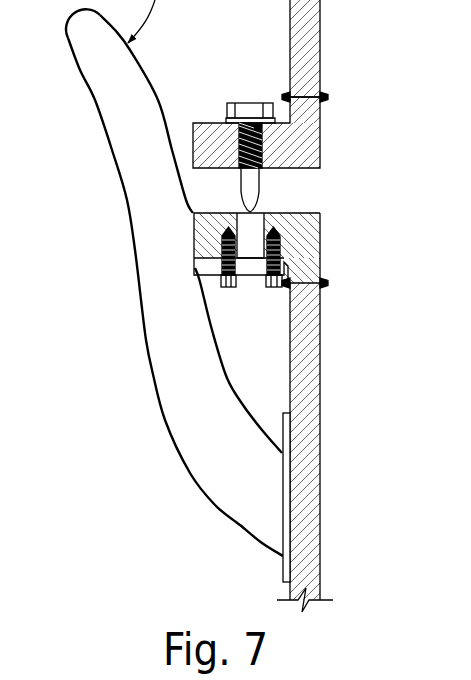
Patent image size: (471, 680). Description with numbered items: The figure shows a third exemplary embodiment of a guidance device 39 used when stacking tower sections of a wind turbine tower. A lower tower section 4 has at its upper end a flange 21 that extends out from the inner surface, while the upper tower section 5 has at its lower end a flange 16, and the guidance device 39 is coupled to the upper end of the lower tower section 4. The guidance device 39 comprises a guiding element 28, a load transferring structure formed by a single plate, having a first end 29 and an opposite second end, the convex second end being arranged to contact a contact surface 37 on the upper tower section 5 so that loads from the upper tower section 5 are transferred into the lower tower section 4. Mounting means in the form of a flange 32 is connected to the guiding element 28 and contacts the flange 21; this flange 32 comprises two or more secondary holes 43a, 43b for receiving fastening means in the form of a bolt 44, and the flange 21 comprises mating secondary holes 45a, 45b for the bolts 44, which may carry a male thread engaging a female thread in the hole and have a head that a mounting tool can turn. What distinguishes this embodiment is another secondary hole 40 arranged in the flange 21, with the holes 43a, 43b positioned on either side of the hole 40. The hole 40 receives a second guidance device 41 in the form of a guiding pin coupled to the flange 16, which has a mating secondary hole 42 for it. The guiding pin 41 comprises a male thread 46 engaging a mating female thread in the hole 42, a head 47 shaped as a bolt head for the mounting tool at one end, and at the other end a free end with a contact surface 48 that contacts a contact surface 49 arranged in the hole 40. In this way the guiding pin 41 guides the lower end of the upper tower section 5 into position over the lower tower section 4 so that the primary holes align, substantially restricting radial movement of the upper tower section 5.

The tower section 4 is at (307, 462).
The tower section 5 is at (305, 41).
The flange 16 is at (203, 142).
The flange 21 is at (202, 227).
The guiding element 28 is at (179, 268).
The first end 29 is at (187, 475).
The flange 32 is at (200, 268).
The contact surface 37 is at (193, 163).
The guidance device 39 is at (118, 312).
The secondary hole 40 is at (269, 212).
The second guidance device 41 is at (262, 113).
The mating secondary hole 42 is at (265, 137).
The secondary hole 43a is at (218, 268).
The secondary hole 43b is at (243, 277).
The bolt 44 is at (275, 287).
The mating secondary hole 45a is at (212, 245).
The mating secondary hole 45b is at (284, 244).
The male thread 46 is at (237, 139).
The head 47 is at (248, 108).
The contact surface 48 is at (263, 175).
The contact surface 49 is at (263, 222).